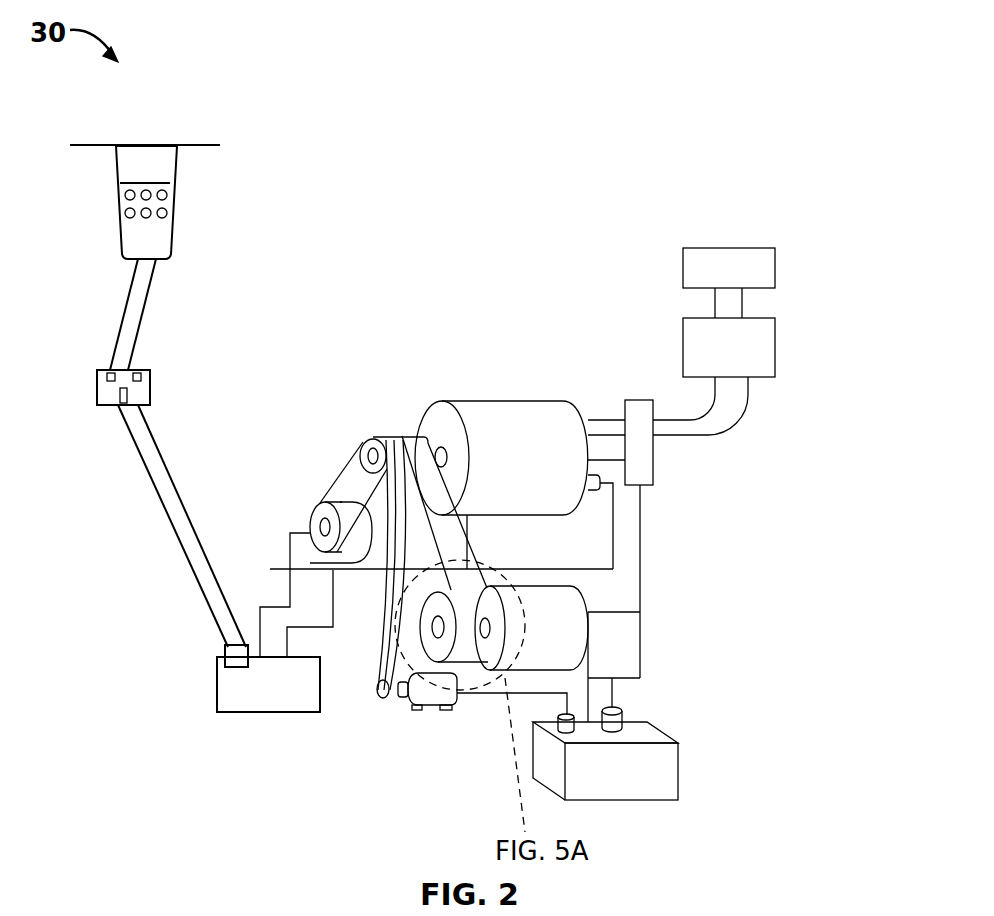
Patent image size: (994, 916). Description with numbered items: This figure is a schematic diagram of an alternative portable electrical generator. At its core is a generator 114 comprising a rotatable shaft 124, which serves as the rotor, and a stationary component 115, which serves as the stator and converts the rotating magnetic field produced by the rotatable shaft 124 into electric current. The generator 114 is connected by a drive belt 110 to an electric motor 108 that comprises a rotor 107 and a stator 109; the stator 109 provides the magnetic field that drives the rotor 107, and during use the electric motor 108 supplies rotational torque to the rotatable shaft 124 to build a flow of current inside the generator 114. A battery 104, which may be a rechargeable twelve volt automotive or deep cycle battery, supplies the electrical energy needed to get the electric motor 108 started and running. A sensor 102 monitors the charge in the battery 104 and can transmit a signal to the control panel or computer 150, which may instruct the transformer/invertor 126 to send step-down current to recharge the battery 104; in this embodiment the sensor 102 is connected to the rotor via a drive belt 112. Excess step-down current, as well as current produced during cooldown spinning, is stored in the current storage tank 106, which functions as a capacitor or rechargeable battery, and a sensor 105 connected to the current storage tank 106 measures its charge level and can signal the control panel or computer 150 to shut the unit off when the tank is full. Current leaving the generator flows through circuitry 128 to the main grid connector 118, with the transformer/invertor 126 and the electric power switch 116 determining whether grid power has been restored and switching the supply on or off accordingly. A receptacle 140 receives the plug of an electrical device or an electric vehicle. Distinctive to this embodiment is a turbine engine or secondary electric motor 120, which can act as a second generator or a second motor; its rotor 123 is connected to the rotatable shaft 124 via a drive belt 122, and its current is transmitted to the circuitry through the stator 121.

The control panel or computer 150 is at (178, 177).
The receptacle 140 is at (152, 385).
The sensor 105 is at (226, 652).
The current storage tank 106 is at (240, 713).
The stator 121 is at (419, 570).
The turbine engine or secondary electric motor 120 is at (336, 484).
The drive belt 122 is at (338, 492).
The rotor 123 is at (313, 527).
The rotatable shaft 124 is at (356, 500).
The generator 114 is at (467, 400).
The stationary component 115 is at (537, 412).
The drive belt 110 is at (465, 560).
The drive belt 112 is at (376, 668).
The rotor 107 is at (465, 668).
The sensor 102 is at (427, 711).
The stator 109 is at (572, 602).
The electric motor 108 is at (590, 628).
The battery 104 is at (678, 770).
The transformer/invertor 126 is at (655, 460).
The circuitry 128 is at (750, 402).
The electric power switch 116 is at (682, 348).
The main grid connector 118 is at (740, 248).